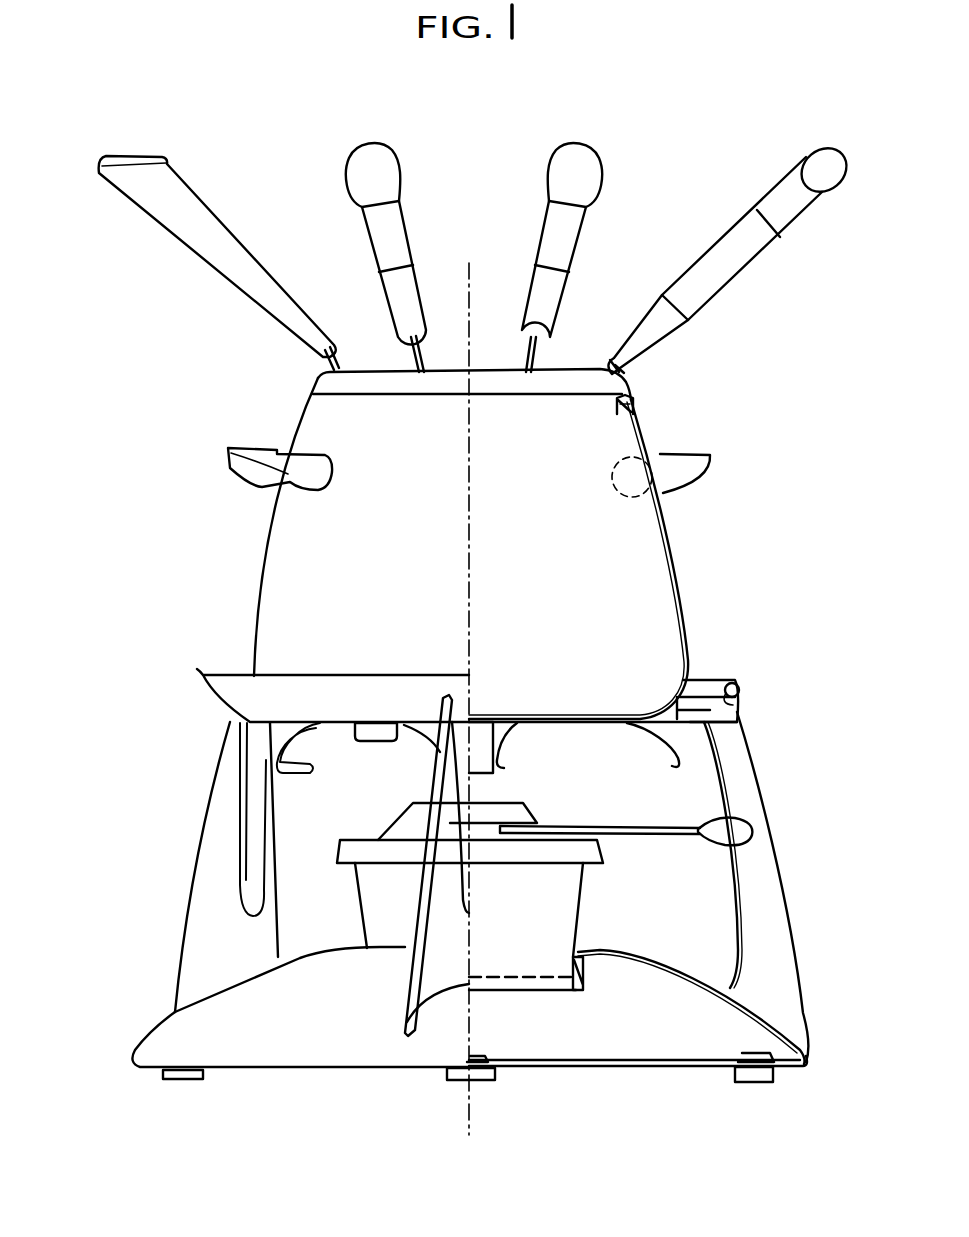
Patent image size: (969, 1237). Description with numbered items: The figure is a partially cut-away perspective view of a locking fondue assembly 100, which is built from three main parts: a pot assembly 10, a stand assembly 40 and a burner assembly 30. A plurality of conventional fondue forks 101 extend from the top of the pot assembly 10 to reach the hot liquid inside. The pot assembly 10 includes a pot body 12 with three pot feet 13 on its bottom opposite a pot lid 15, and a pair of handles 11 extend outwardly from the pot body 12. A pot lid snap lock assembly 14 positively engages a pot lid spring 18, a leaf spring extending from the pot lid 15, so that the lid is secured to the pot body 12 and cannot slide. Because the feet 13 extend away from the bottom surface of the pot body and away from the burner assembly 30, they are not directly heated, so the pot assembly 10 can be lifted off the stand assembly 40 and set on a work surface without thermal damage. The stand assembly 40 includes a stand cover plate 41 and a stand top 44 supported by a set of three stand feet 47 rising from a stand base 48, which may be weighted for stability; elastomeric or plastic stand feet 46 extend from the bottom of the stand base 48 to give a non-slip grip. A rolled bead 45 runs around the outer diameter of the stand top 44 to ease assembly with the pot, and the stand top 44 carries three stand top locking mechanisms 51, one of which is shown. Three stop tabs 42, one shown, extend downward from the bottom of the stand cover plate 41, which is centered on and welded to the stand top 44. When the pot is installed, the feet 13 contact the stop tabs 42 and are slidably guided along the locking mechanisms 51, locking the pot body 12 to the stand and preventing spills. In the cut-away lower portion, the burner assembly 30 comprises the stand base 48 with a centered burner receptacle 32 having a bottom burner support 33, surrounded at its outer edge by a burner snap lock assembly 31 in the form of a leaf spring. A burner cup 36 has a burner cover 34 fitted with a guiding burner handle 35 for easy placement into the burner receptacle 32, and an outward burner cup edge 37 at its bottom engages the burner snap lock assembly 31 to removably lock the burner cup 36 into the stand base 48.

The locking fondue assembly 100 is at (185, 341).
The fondue forks 101 is at (183, 182).
The pot assembly 10 is at (440, 531).
The handles 11 is at (228, 452).
The pot body 12 is at (298, 428).
The pot feet 13 is at (311, 752).
The pot lid snap lock assembly 14 is at (628, 395).
The pot lid 15 is at (318, 378).
The pot lid spring 18 is at (634, 403).
The burner assembly 30 is at (517, 914).
The burner snap lock assembly 31 is at (600, 952).
The burner receptacle 32 is at (575, 945).
The bottom burner support 33 is at (540, 992).
The burner cover 34 is at (393, 832).
The guiding burner handle 35 is at (600, 825).
The burner cup 36 is at (356, 900).
The outward burner cup edge 37 is at (585, 985).
The stand assembly 40 is at (462, 863).
The stand cover plate 41 is at (695, 690).
The stop tabs 42 is at (377, 741).
The stand top 44 is at (735, 690).
The rolled bead 45 is at (741, 689).
The stand feet 46 is at (775, 1080).
The stand feet 47 is at (209, 793).
The stand base 48 is at (148, 1036).
The stand top locking mechanism 51 is at (722, 721).